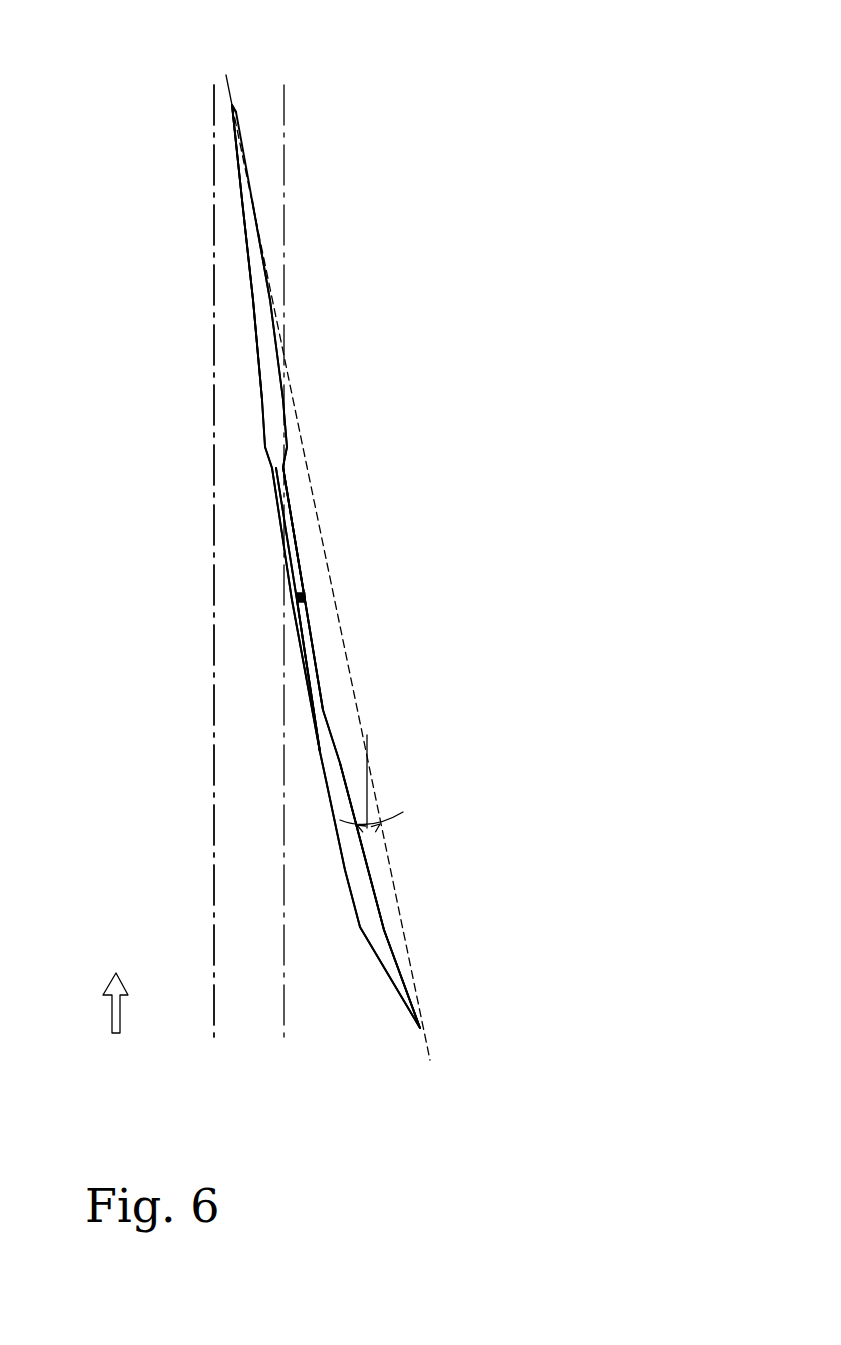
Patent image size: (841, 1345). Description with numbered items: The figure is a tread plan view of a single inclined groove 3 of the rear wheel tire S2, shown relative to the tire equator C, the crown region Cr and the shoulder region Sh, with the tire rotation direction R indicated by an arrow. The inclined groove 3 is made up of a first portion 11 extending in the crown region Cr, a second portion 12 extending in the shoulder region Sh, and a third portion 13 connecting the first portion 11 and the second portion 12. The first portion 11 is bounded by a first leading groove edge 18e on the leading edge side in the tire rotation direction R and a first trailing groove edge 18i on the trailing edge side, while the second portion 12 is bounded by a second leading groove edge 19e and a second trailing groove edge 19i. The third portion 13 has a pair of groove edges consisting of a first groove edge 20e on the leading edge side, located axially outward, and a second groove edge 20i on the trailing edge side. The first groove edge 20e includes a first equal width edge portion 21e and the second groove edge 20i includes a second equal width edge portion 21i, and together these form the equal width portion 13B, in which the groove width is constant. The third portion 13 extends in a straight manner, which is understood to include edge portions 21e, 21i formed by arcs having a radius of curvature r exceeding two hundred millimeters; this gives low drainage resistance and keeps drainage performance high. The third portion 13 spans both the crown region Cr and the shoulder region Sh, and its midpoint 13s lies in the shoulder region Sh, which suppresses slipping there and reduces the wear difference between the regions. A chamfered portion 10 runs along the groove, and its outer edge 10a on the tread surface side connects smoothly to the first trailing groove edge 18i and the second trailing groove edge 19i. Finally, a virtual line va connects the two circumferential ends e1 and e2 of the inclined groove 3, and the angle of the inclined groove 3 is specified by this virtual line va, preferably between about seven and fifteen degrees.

The inclined groove 3 is at (199, 376).
The chamfered portion 10 is at (312, 698).
The outer edge 10a is at (315, 673).
The first portion 11 is at (303, 248).
The second portion 12 is at (421, 977).
The third portion 13 is at (462, 684).
The equal width portion 13B is at (303, 598).
The midpoint 13s is at (297, 603).
The first trailing groove edge 18i is at (262, 422).
The first leading groove edge 18e is at (283, 415).
The second trailing groove edge 19i is at (345, 878).
The second leading groove edge 19e is at (379, 903).
The second groove edge 20i is at (278, 557).
The first groove edge 20e is at (316, 495).
The second equal width edge portion 21i is at (278, 508).
The first equal width edge portion 21e is at (296, 535).
The tire equator C is at (212, 104).
The crown region Cr is at (245, 1032).
The shoulder region Sh is at (329, 1032).
The rear wheel tire S2 is at (465, 127).
The virtual line va is at (228, 72).
The end of the inclined groove e1 is at (234, 103).
The end of the inclined groove e2 is at (422, 1032).
The radius of curvature r is at (319, 674).
The tire rotation direction R is at (115, 991).